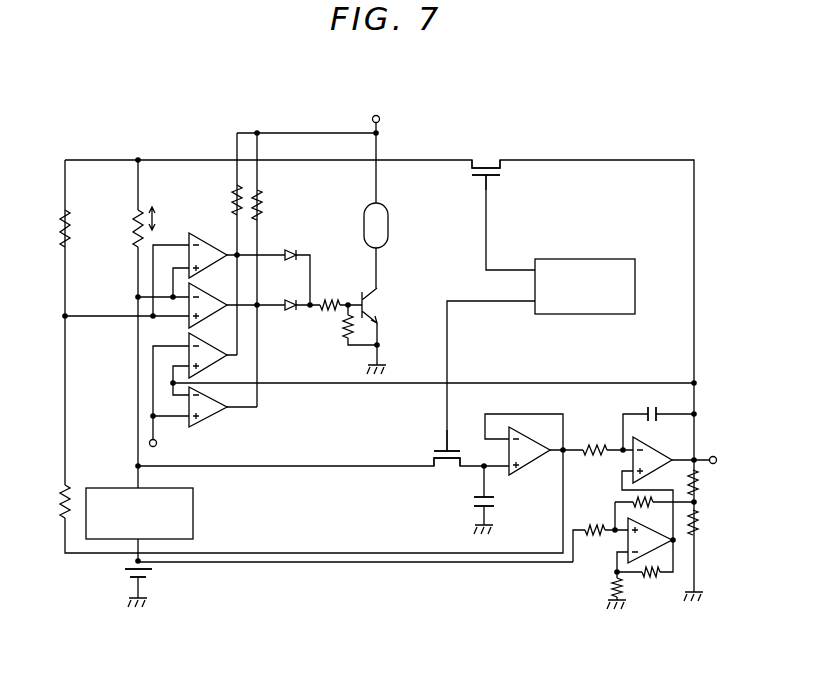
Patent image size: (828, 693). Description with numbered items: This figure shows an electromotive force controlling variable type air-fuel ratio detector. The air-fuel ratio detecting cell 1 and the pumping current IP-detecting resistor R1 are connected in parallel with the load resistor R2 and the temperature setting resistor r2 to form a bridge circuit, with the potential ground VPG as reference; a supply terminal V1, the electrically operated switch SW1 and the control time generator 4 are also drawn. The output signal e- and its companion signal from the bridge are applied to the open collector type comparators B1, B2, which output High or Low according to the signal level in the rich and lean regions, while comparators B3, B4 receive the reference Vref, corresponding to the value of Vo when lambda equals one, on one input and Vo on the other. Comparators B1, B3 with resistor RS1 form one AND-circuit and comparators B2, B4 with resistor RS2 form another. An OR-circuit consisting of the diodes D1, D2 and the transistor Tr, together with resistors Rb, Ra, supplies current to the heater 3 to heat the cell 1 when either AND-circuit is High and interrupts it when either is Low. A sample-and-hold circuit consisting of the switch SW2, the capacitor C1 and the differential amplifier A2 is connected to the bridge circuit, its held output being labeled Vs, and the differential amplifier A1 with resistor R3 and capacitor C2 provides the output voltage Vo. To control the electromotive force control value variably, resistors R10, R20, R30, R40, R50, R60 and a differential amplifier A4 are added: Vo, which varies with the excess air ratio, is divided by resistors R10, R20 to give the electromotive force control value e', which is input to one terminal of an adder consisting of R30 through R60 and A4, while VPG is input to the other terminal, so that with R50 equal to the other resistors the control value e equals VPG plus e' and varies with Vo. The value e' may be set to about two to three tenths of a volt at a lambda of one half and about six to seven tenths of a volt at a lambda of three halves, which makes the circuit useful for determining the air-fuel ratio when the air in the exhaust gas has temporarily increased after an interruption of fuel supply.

The air-fuel ratio detecting cell 1 is at (194, 499).
The heater 3 is at (381, 217).
The control time generator 4 is at (635, 269).
The pumping current Ip-detecting resistor R1 is at (135, 228).
The load resistor R2 is at (62, 228).
The resistor RS1 is at (232, 201).
The resistor RS2 is at (262, 220).
The pumping current IP is at (153, 207).
The open collector type comparator B1 is at (210, 240).
The open collector type comparator B2 is at (208, 303).
The open collector type comparator B3 is at (208, 352).
The open collector type comparator B4 is at (212, 415).
The diode D1 is at (289, 245).
The diode D2 is at (287, 320).
The resistor Rb is at (329, 294).
The resistor Ra is at (342, 322).
The transistor Tr is at (380, 306).
The supply voltage terminal V1 is at (371, 102).
The switch SW1 is at (486, 158).
The switch SW2 is at (432, 452).
The capacitor C1 is at (475, 498).
The capacitor C2 is at (646, 407).
The differential amplifier A1 is at (659, 451).
The differential amplifier A2 is at (530, 470).
The differential amplifier A4 is at (625, 545).
The sample voltage Vs is at (560, 448).
The resistor R3 is at (594, 444).
The resistor R10 is at (710, 484).
The resistor R20 is at (710, 525).
The resistor R30 is at (594, 524).
The resistor R40 is at (630, 500).
The resistor R50 is at (651, 578).
The resistor R60 is at (611, 588).
The output voltage Vo is at (731, 462).
The electromotive force control value e is at (609, 470).
The electromotive force control value e' is at (717, 508).
The output signal e- is at (44, 315).
The reference voltage Vref is at (175, 453).
The potential ground VPG is at (154, 581).
The temperature setting resistor r2 is at (60, 505).